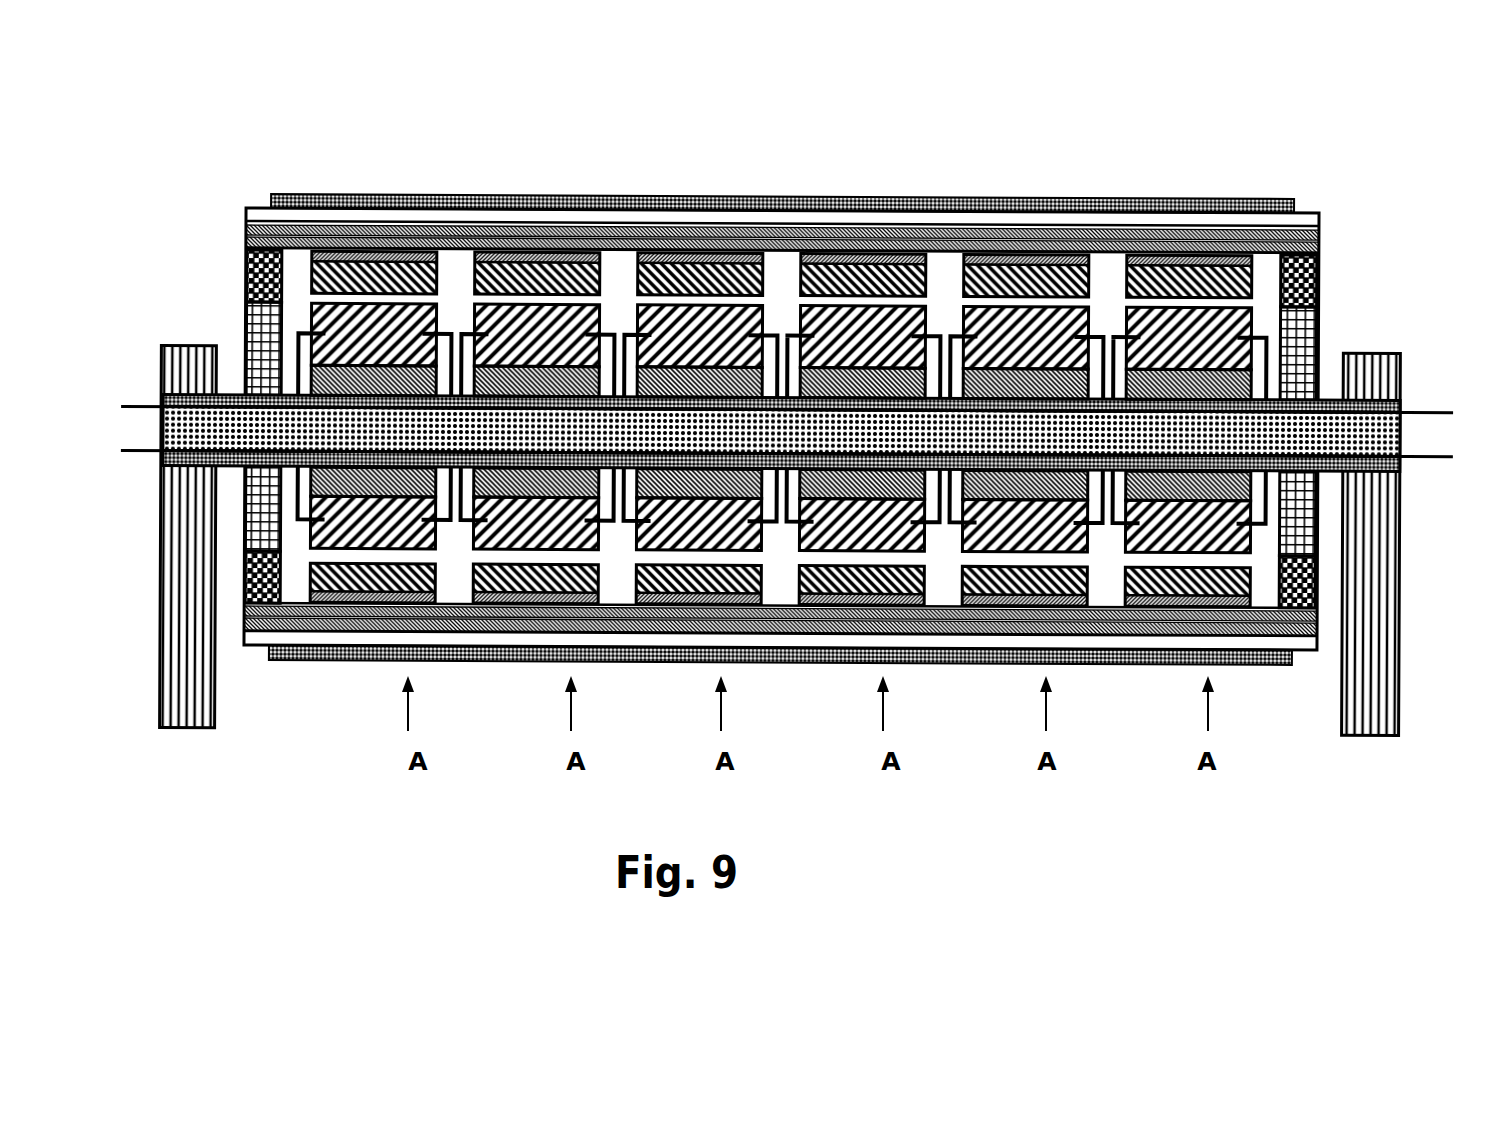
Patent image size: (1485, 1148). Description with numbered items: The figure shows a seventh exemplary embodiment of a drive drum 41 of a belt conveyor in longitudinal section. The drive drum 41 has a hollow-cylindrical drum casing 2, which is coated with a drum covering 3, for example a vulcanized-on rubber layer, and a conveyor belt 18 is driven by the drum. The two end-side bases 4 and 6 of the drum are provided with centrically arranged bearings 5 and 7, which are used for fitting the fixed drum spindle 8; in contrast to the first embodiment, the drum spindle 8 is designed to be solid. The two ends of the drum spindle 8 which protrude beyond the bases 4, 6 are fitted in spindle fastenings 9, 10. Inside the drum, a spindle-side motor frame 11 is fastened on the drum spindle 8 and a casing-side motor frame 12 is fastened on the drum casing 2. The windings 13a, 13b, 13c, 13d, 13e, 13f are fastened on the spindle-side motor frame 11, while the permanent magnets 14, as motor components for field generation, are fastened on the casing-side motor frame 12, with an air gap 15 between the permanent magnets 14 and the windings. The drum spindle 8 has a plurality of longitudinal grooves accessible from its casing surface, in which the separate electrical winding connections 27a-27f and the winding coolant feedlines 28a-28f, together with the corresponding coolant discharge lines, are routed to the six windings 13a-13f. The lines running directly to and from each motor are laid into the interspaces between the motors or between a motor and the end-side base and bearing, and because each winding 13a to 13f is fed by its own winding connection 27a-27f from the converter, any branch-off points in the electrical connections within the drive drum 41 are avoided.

The drum casing 2 is at (645, 227).
The drum covering 3 is at (698, 185).
The end-side base 4 is at (1283, 600).
The bearing 5 is at (267, 353).
The end-side base 6 is at (1300, 386).
The bearing 7 is at (1290, 375).
The drum spindle 8 is at (224, 428).
The spindle fastening 9 is at (183, 345).
The spindle fastening 10 is at (1358, 347).
The spindle-side motor frame 11 is at (340, 477).
The casing-side motor frame 12 is at (400, 230).
The winding 13a is at (387, 517).
The winding 13b is at (508, 325).
The winding 13c is at (681, 517).
The winding 13d is at (844, 517).
The winding 13e is at (1005, 517).
The winding 13f is at (1170, 517).
The permanent magnets 14 is at (385, 260).
The air gap 15 is at (420, 258).
The conveyor belt 18 is at (763, 177).
The winding connections 27a-27f is at (1430, 402).
The winding coolant feedlines 28a-28f is at (145, 447).
The drive drum 41 is at (632, 144).